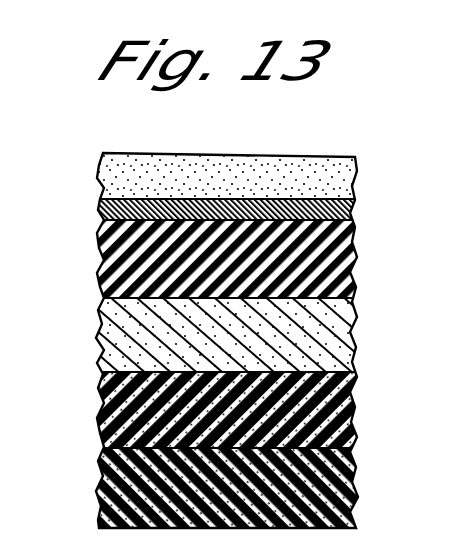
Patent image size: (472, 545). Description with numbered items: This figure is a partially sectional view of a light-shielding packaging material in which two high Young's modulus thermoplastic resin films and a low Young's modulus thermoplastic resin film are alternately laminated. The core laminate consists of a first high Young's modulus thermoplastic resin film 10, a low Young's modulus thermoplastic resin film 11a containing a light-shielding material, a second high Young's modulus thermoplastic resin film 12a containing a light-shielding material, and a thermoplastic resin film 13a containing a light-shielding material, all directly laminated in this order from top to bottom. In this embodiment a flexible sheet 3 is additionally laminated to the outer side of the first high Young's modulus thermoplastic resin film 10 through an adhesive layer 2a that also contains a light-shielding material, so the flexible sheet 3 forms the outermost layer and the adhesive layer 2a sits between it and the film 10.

The flexible sheet 3 is at (343, 178).
The adhesive layer 2a is at (100, 210).
The first high Young's modulus thermoplastic resin film 10 is at (348, 262).
The low Young's modulus thermoplastic resin film 11a is at (348, 337).
The second high Young's modulus thermoplastic resin film 12a is at (350, 415).
The thermoplastic resin film 13a is at (347, 490).